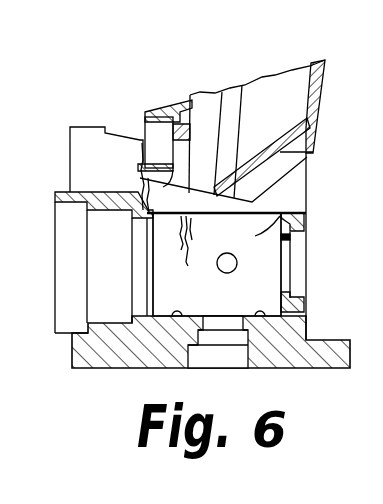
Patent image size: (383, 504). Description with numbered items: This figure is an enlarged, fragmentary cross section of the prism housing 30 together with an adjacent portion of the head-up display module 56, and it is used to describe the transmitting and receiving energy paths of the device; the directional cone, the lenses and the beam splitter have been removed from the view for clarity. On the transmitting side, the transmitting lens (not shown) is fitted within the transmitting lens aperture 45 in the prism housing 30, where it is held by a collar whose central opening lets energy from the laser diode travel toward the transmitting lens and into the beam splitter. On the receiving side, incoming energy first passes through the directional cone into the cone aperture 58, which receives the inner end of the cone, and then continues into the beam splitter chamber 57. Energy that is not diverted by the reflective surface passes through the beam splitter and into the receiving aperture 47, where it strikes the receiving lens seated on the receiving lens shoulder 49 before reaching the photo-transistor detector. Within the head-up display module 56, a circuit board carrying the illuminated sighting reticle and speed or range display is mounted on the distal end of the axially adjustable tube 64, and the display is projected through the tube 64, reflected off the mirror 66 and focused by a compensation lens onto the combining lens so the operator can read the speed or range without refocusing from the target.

The prism housing 30 is at (113, 368).
The transmitting lens aperture 45 is at (220, 346).
The receiving aperture 47 is at (280, 267).
The receiving lens shoulder 49 is at (306, 284).
The module 56 is at (336, 88).
The beam splitter chamber 57 is at (306, 213).
The cone aperture 58 is at (55, 222).
The axially adjustable tube 64 is at (146, 124).
The mirror 66 is at (294, 114).